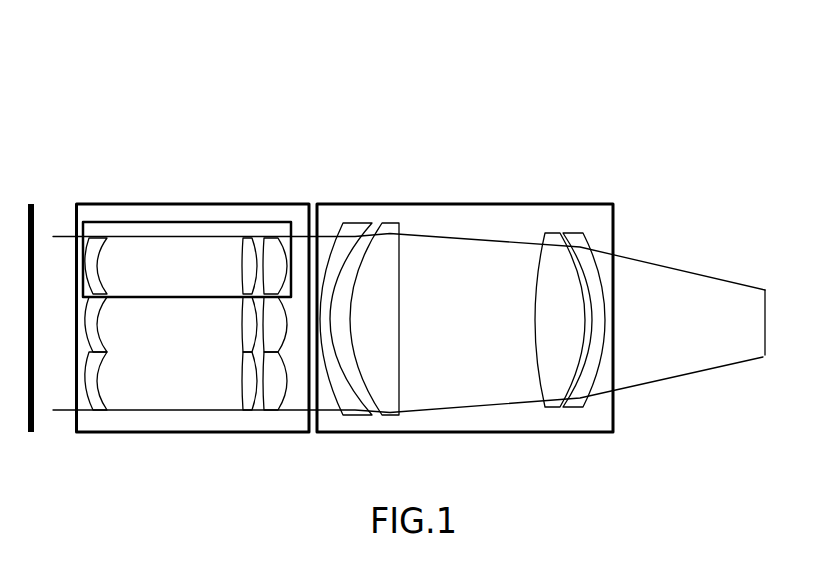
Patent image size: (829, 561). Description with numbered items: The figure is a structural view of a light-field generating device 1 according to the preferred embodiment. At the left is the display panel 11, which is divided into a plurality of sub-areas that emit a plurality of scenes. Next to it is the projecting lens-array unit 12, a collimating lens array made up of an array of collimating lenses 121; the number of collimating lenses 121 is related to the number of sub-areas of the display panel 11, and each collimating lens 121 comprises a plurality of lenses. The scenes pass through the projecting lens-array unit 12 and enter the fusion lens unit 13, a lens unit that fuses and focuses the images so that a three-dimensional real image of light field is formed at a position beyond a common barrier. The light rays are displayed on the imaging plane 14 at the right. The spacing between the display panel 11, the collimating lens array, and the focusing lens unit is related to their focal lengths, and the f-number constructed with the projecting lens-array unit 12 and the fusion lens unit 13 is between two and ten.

The light-field generating device 1 is at (379, 101).
The display panel 11 is at (35, 216).
The projecting lens-array unit 12 is at (152, 204).
The collimating lens 121 is at (217, 222).
The fusion lens unit 13 is at (481, 204).
The imaging plane 14 is at (767, 318).